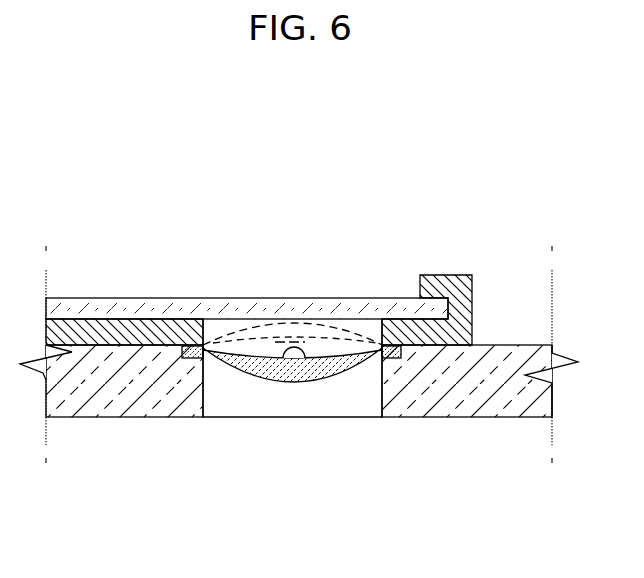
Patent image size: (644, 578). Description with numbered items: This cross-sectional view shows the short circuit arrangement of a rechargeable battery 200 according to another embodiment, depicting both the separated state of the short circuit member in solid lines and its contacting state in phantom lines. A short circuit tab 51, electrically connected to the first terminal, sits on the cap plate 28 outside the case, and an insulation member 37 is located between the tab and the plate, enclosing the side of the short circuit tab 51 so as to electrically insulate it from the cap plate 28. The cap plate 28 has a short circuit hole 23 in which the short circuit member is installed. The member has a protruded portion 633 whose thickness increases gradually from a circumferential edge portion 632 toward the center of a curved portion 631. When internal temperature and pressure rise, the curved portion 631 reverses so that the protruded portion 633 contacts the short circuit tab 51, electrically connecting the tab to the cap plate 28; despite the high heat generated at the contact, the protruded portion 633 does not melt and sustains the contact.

The rechargeable battery 200 is at (299, 295).
The short circuit tab 51 is at (229, 306).
The insulation member 37 is at (454, 273).
The short circuit hole 23 is at (228, 396).
The cap plate 28 is at (483, 392).
The curved portion 631 is at (285, 364).
The circumferential edge portion 632 is at (390, 358).
The protruded portion 633 is at (328, 372).